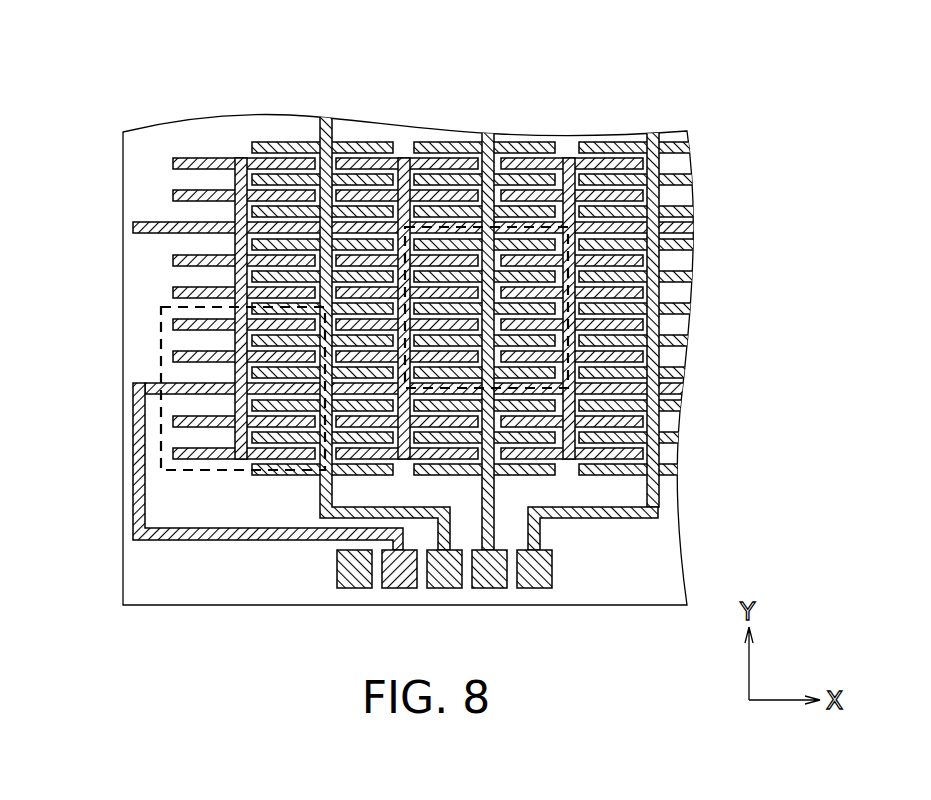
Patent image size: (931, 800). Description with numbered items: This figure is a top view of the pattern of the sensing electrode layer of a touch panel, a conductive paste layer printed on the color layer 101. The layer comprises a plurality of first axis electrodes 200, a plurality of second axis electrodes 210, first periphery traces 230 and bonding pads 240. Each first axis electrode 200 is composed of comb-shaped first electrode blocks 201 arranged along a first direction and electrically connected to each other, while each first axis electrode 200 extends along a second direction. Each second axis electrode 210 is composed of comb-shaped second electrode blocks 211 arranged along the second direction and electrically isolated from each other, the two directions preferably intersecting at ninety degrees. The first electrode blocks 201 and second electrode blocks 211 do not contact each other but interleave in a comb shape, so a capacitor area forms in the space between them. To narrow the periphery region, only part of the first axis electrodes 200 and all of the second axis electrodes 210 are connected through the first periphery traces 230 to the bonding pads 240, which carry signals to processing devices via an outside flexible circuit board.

The color layer 101 is at (675, 568).
The first axis electrode 200 is at (695, 228).
The first electrode block 201 is at (161, 342).
The second axis electrode 210 is at (328, 118).
The second electrode block 211 is at (405, 207).
The first periphery trace 230 is at (273, 541).
The bonding pad 240 is at (558, 602).